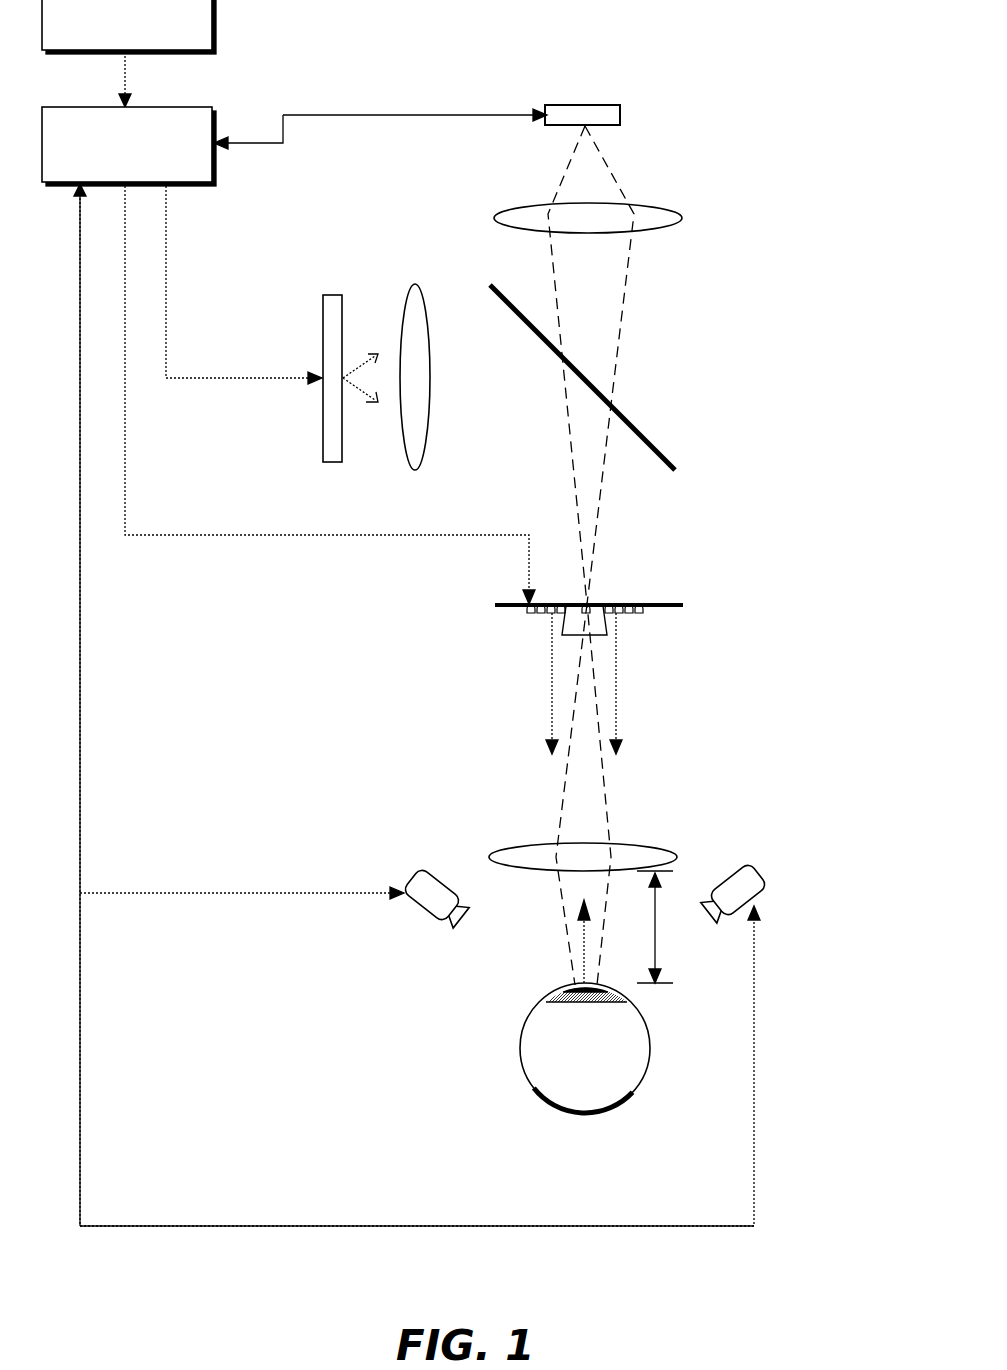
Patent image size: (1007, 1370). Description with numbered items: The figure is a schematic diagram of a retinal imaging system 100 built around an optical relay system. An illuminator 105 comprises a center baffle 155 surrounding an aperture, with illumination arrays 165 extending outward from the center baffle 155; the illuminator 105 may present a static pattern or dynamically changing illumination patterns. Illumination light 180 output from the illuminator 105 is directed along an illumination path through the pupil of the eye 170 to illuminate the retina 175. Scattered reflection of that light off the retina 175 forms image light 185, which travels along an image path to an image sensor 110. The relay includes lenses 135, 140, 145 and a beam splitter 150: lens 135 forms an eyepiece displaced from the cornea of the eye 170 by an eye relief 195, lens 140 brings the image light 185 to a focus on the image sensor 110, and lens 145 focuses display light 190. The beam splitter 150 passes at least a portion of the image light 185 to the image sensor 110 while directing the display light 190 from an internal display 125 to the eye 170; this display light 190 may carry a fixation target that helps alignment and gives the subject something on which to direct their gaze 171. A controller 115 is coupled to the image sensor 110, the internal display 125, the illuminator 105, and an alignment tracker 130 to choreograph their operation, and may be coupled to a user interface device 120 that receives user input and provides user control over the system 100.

The retinal imaging system 100 is at (176, 1047).
The illuminator 105 is at (690, 692).
The image sensor 110 is at (621, 112).
The controller 115 is at (129, 146).
The user interface device 120 is at (129, 53).
The internal display 125 is at (323, 340).
The alignment tracker 130 is at (428, 866).
The lens 135 is at (681, 860).
The lens 140 is at (682, 218).
The lens 145 is at (414, 286).
The beam splitter 150 is at (676, 468).
The center baffle 155 is at (568, 632).
The illumination arrays 165 is at (514, 628).
The eye 170 is at (585, 1048).
The gaze 171 is at (583, 935).
The retina 175 is at (597, 1114).
The illumination light 180 is at (618, 712).
The image light 185 is at (597, 508).
The display light 190 is at (360, 395).
The eye relief 195 is at (657, 946).